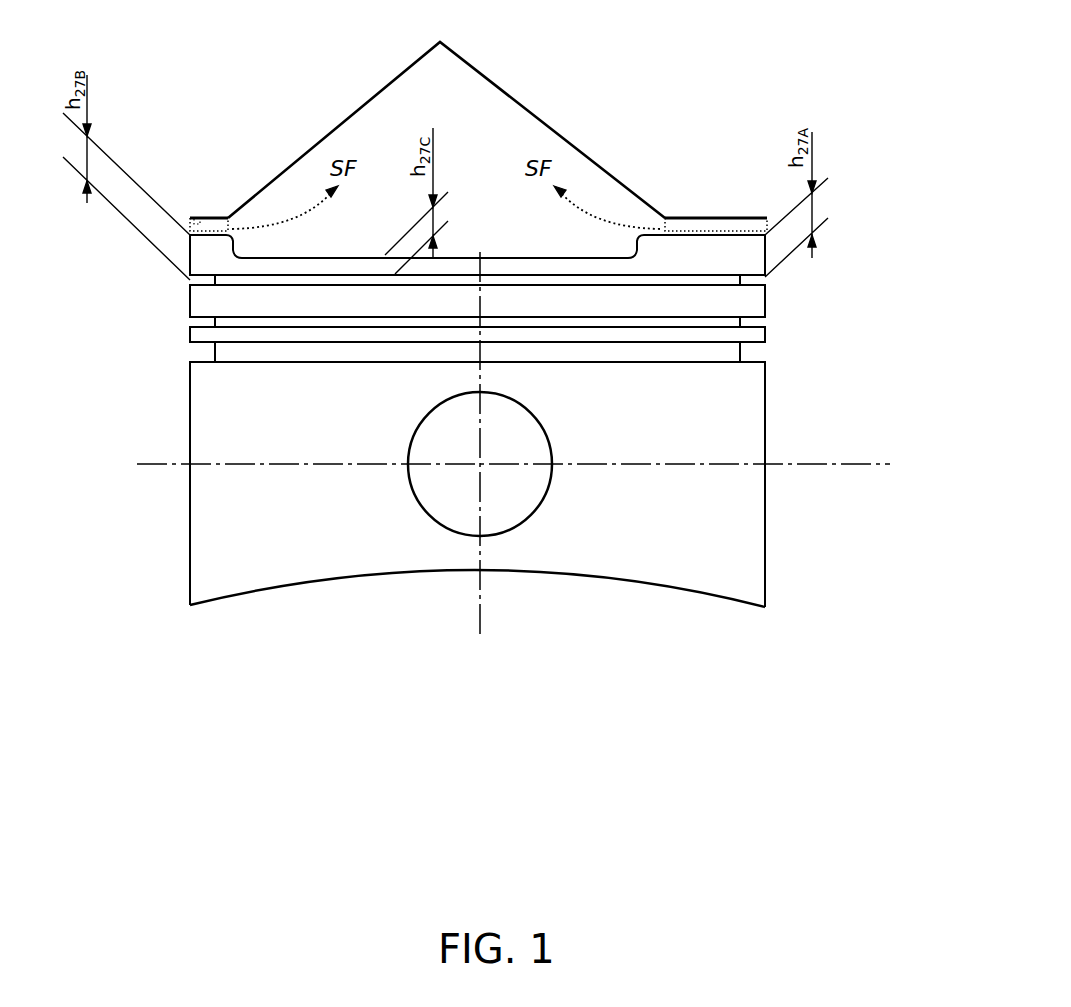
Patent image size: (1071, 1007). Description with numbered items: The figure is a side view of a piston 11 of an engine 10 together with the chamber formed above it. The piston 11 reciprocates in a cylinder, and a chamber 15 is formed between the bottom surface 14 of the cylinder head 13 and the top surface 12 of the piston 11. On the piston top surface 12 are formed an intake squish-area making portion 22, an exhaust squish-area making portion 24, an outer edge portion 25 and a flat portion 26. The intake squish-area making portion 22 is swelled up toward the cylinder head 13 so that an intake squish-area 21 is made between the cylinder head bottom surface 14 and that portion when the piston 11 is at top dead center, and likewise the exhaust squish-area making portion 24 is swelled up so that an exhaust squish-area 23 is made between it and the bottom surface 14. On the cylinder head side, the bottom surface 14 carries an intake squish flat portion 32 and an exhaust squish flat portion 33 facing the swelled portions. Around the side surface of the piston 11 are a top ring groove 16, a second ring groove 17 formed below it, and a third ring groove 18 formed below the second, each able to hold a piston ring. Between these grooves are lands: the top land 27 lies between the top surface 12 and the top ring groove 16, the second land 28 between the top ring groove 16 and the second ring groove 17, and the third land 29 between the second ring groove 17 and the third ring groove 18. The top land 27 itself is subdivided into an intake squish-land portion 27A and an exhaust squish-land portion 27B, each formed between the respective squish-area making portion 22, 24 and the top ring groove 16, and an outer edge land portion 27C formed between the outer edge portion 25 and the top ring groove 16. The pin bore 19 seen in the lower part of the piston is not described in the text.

The engine 10 is at (157, 794).
The piston 11 is at (172, 637).
The top surface 12 is at (480, 237).
The cylinder head 13 is at (632, 38).
The bottom surface 14 is at (462, 112).
The chamber 15 is at (502, 113).
The top ring groove 16 is at (200, 281).
The second ring groove 17 is at (200, 321).
The third ring groove 18 is at (203, 352).
The piston pin hole 19 is at (418, 518).
The intake squish-area 21 is at (686, 212).
The intake squish-area making portion 22 is at (715, 232).
The exhaust squish-area 23 is at (219, 212).
The exhaust squish-area making portion 24 is at (206, 232).
The outer edge portion 25 is at (378, 259).
The flat portion 26 is at (346, 259).
The top land 27 is at (177, 252).
The intake squish-land portion 27A is at (642, 242).
The exhaust squish-land portion 27B is at (215, 241).
The outer edge land portion 27C is at (530, 266).
The second land 28 is at (177, 299).
The third land 29 is at (177, 335).
The intake squish flat portion 32 is at (757, 216).
The exhaust squish flat portion 33 is at (197, 215).